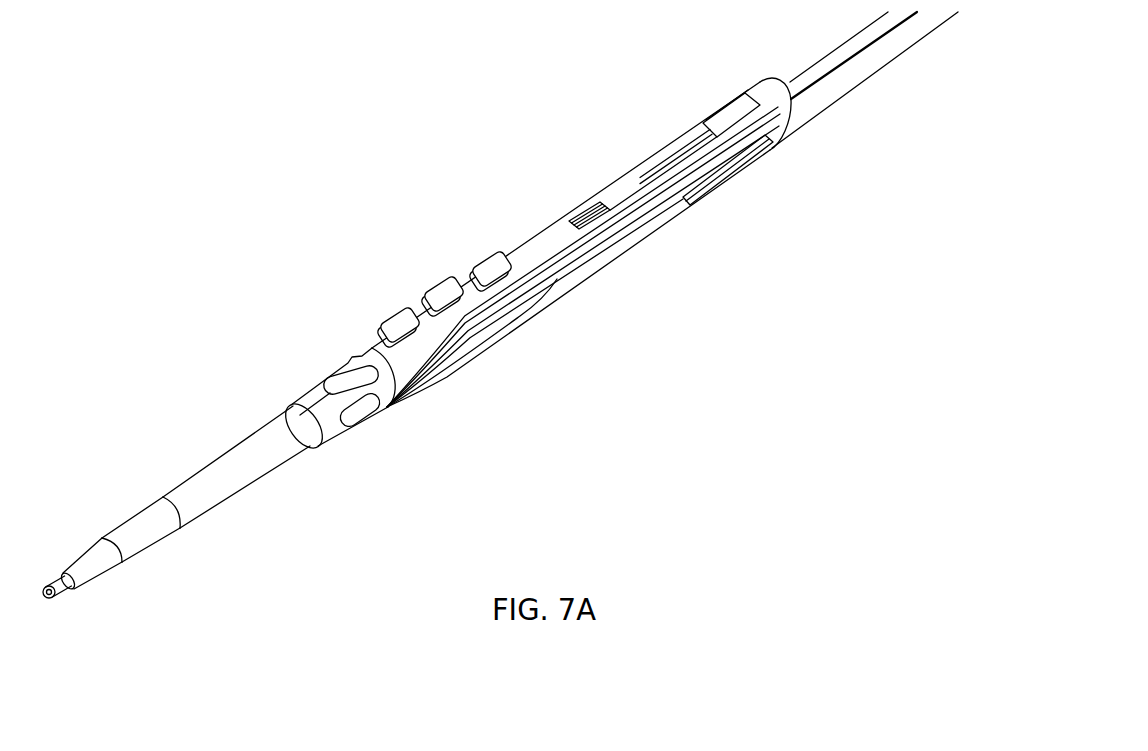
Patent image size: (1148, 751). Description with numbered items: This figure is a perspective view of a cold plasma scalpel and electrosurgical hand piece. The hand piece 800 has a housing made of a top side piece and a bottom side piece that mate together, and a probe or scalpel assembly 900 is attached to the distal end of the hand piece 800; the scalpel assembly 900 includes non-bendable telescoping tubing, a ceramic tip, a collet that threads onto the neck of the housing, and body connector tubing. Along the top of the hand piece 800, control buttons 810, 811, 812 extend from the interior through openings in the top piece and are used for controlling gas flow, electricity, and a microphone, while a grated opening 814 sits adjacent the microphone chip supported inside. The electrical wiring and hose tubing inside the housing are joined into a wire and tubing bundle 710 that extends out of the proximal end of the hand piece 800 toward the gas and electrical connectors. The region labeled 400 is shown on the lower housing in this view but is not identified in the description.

The scalpel assembly 900 is at (207, 481).
The hand piece 800 is at (640, 175).
The control button 810 is at (380, 327).
The control button 811 is at (427, 292).
The control button 812 is at (473, 267).
The grated opening 814 is at (580, 208).
The handle body 400 is at (592, 262).
The wire and tubing bundle 710 is at (827, 85).